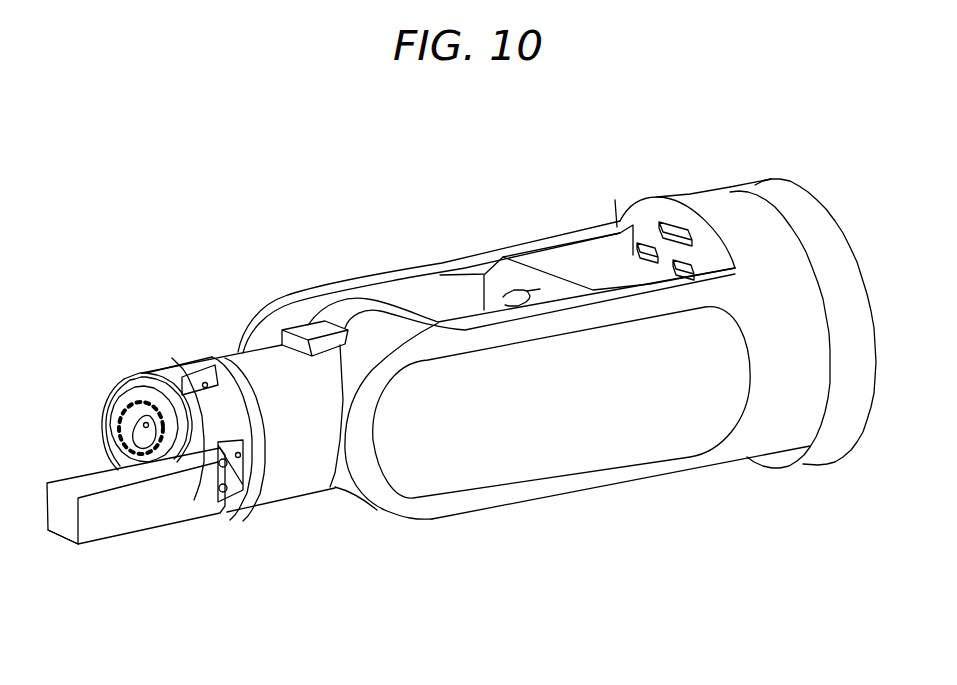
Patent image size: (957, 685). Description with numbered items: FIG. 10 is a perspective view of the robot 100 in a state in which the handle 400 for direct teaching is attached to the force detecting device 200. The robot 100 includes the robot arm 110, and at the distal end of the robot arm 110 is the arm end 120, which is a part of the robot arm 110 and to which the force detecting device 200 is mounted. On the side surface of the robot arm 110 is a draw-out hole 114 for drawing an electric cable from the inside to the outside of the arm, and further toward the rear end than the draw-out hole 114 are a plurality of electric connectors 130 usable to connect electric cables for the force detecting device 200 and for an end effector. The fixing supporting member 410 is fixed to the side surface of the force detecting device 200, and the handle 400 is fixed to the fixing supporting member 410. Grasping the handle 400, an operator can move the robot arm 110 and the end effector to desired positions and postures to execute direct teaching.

The robot 100 is at (214, 192).
The robot arm 110 is at (592, 497).
The draw-out hole 114 is at (515, 300).
The arm end 120 is at (292, 478).
The electric connectors 130 is at (684, 258).
The force detecting device 200 is at (120, 357).
The handle 400 is at (118, 522).
The fixing supporting member 410 is at (197, 366).